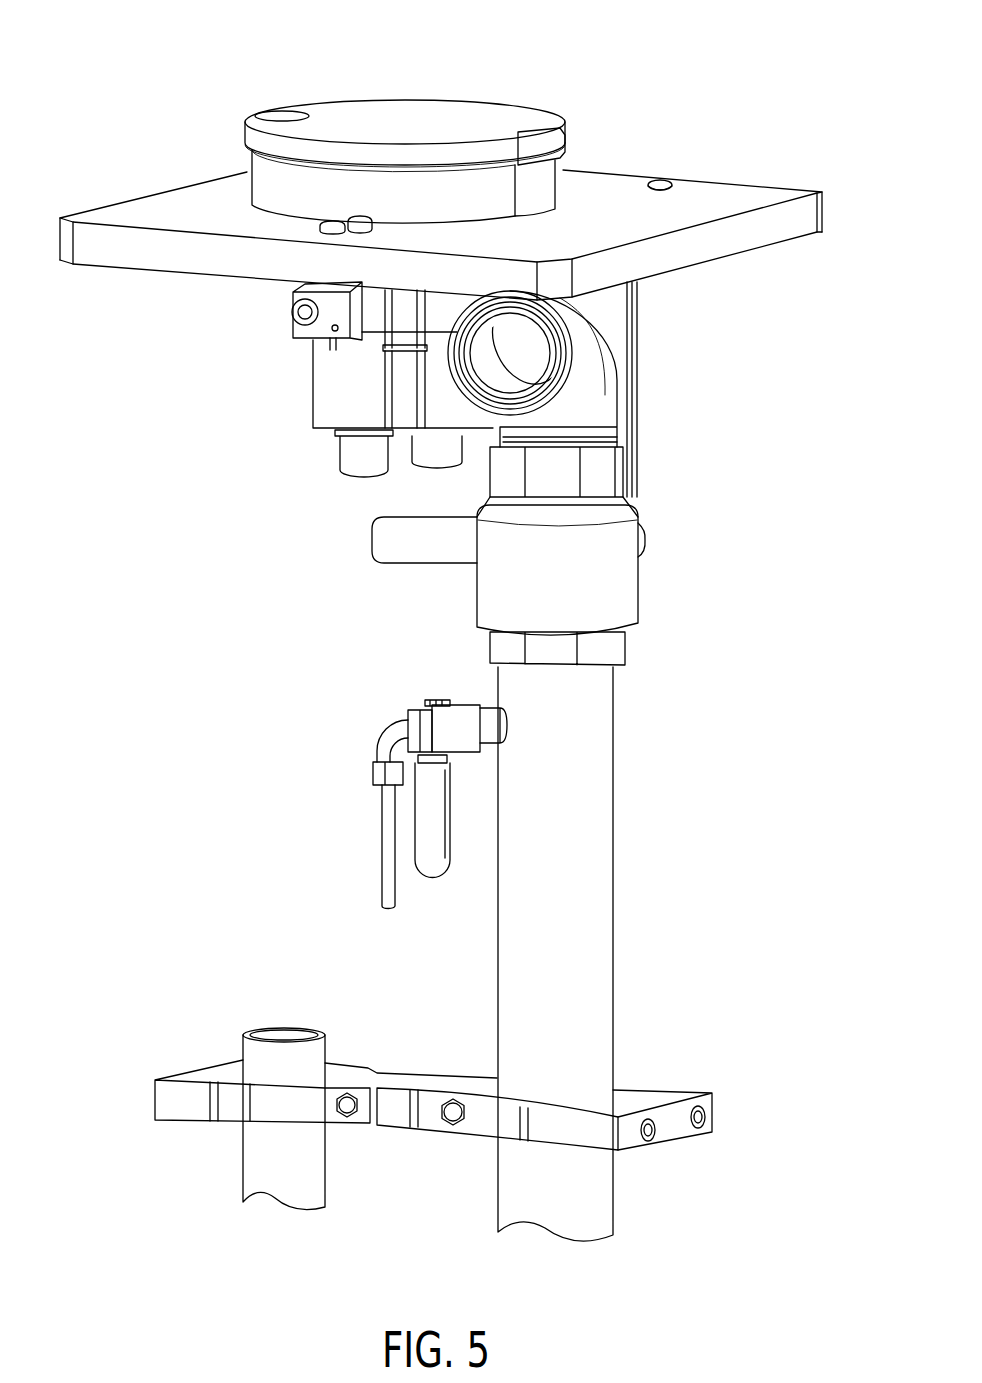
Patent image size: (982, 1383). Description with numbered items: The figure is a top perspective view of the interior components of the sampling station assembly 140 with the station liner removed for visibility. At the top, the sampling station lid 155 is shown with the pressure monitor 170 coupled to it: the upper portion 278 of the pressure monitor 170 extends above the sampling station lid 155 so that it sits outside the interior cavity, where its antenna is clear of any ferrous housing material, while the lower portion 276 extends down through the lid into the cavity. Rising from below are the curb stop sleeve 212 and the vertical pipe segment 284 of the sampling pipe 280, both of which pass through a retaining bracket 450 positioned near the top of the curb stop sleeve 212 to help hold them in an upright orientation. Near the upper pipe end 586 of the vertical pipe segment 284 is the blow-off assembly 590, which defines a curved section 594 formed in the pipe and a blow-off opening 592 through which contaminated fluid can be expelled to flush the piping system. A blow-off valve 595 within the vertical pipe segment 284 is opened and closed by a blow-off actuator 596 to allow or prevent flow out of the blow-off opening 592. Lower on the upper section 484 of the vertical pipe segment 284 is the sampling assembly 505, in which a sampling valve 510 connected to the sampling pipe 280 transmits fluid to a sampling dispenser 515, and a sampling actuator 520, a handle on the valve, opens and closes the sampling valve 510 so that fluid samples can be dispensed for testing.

The sampling station assembly 140 is at (112, 123).
The sampling station lid 155 is at (693, 217).
The pressure monitor 170 is at (477, 73).
The upper portion 278 is at (388, 120).
The lower portion 276 is at (323, 402).
The blow-off assembly 590 is at (435, 405).
The upper pipe end 586 is at (575, 415).
The curved section 594 is at (595, 328).
The blow-off opening 592 is at (560, 360).
The blow-off valve 595 is at (580, 573).
The blow-off actuator 596 is at (383, 538).
The upper section 484 is at (568, 695).
The vertical pipe segment 284 is at (583, 912).
The sampling pipe 280 is at (583, 1003).
The sampling assembly 505 is at (407, 678).
The sampling valve 510 is at (455, 728).
The sampling dispenser 515 is at (388, 827).
The sampling actuator 520 is at (428, 797).
The curb stop sleeve 212 is at (263, 1155).
The retaining bracket 450 is at (647, 1097).